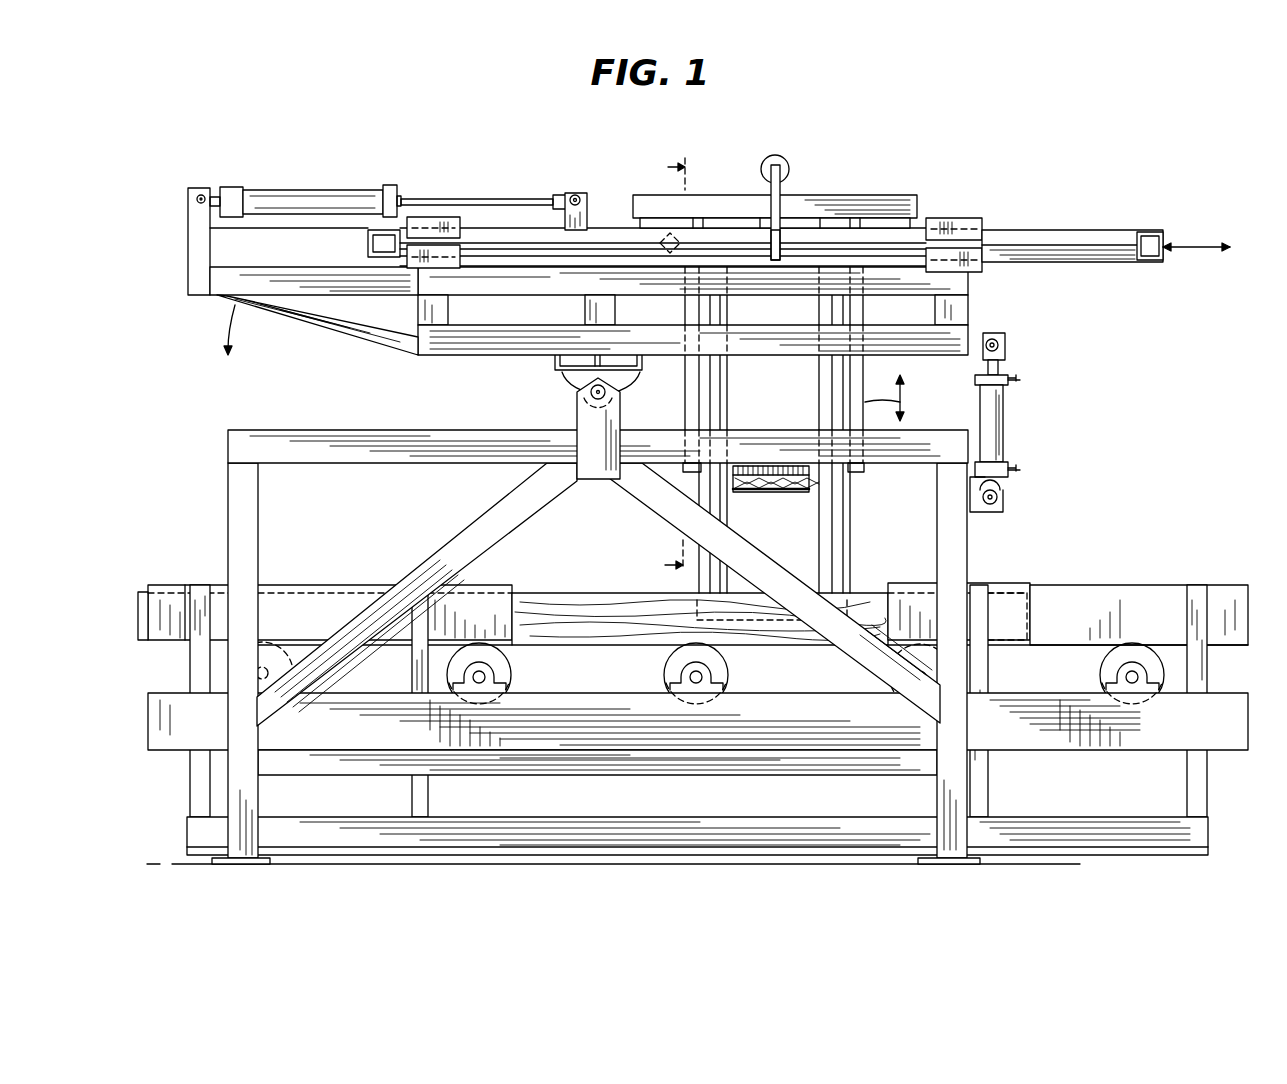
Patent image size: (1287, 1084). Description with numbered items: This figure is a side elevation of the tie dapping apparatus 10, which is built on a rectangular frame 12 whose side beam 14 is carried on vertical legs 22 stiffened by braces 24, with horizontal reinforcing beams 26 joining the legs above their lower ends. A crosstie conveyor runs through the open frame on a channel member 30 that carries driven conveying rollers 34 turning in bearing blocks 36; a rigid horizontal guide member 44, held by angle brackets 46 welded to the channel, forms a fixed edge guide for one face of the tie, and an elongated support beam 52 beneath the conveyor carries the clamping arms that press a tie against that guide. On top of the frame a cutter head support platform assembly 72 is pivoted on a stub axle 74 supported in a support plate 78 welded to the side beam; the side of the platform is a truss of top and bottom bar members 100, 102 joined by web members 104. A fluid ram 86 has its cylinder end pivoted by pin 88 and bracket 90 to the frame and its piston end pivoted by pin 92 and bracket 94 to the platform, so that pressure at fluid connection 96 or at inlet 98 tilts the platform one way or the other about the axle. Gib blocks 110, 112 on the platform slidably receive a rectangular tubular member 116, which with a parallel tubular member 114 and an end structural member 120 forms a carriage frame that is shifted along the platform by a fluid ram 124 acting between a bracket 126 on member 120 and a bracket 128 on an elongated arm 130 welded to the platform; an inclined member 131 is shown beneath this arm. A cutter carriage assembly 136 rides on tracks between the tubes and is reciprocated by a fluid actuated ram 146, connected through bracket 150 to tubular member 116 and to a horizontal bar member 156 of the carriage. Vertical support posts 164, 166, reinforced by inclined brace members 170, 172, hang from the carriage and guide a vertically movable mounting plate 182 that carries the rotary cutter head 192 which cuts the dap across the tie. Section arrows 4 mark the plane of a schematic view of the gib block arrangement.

The tie dapping apparatus 10 is at (936, 193).
The frame 12 is at (243, 428).
The side beam 14 is at (470, 436).
The vertical legs 22 is at (240, 504).
The braces 24 is at (458, 523).
The reinforcing beams 26 is at (712, 770).
The channel member 30 is at (1242, 730).
The conveying rollers 34 is at (500, 660).
The bearing blocks 36 is at (506, 678).
The guide member 44 is at (1225, 590).
The angle brackets 46 is at (1207, 670).
The support beam 52 is at (1207, 832).
The cutter head support platform assembly 72 is at (450, 360).
The stub axle 74 is at (590, 420).
The support plate 78 is at (612, 396).
The fluid actuated ram 86 is at (1004, 425).
The pin 88 is at (1000, 497).
The bracket 90 is at (1003, 505).
The pin 92 is at (1000, 360).
The bracket 94 is at (1006, 341).
The fluid connection 96 is at (1018, 468).
The inlet 98 is at (1018, 380).
The top bar member 100 is at (967, 290).
The bottom bar member 102 is at (967, 338).
The web members 104 is at (967, 312).
The gib block 110 is at (966, 220).
The gib block 112 is at (440, 215).
The first rectangular tubular member 114 is at (1090, 232).
The second rectangular tubular member 116 is at (647, 247).
The structural member 120 is at (1165, 258).
The fluid ram 124 is at (318, 190).
The bracket 126 is at (583, 197).
The bracket 128 is at (187, 228).
The elongated arm 130 is at (222, 292).
The inclined brace 131 is at (332, 332).
The cutter carriage assembly 136 is at (704, 194).
The fluid actuated ram 146 is at (782, 158).
The bracket 150 is at (785, 200).
The horizontal bar member 156 is at (878, 195).
The vertical support post 164 is at (845, 515).
The vertical support post 166 is at (727, 510).
The inclined brace member 170 is at (704, 575).
The inclined brace member 172 is at (845, 484).
The mounting plate 182 is at (868, 366).
The cutter head 192 is at (775, 493).
The section line 4 is at (666, 359).